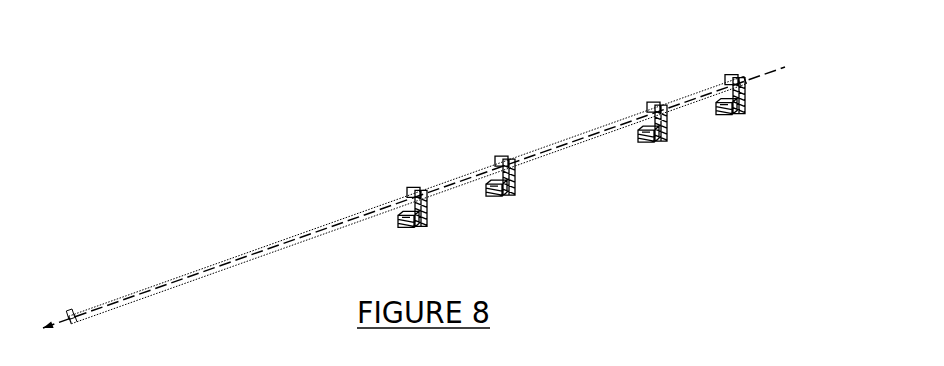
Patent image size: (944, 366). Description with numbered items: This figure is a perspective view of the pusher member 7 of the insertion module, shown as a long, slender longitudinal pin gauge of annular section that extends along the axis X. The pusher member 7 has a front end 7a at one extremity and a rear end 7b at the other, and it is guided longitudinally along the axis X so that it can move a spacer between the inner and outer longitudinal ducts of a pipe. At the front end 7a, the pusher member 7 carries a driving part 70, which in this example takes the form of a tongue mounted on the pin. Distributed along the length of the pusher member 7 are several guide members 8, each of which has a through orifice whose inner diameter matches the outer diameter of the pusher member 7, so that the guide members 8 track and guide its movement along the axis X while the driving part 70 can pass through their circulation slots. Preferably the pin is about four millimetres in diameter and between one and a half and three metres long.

The pusher member 7 is at (243, 253).
The front end 7a is at (79, 301).
The rear end 7b is at (749, 90).
The driving part 70 is at (68, 310).
The guide member 8 is at (413, 192).
The axis X is at (431, 186).